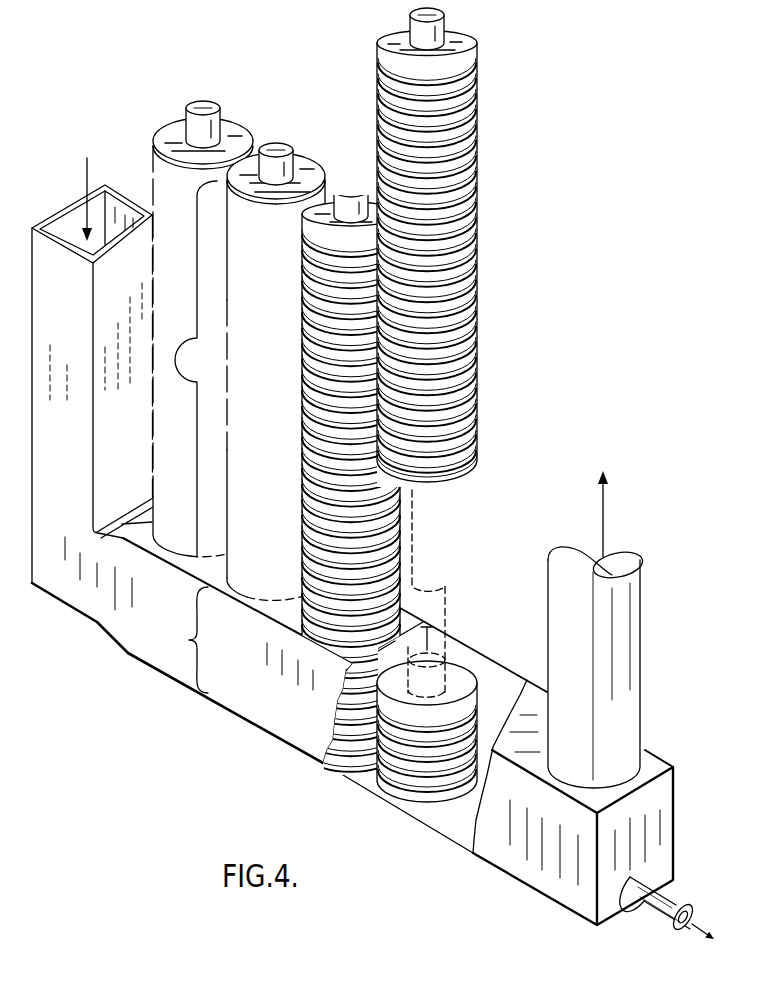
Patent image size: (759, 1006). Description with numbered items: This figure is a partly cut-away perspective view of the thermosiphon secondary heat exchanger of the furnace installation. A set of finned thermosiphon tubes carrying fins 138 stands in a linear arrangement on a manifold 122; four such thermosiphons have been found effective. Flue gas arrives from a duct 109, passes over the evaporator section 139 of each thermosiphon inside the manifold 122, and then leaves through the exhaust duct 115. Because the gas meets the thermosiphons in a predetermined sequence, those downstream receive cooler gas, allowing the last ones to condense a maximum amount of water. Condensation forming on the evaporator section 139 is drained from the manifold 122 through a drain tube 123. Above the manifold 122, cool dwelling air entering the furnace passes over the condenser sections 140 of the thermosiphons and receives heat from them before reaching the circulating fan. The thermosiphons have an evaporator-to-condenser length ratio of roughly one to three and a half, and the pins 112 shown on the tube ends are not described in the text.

The duct 109 is at (52, 265).
The pin 112 is at (212, 106).
The exhaust duct 115 is at (622, 650).
The manifold 122 is at (227, 690).
The drain tube 123 is at (657, 903).
The fins 138 is at (462, 222).
The evaporator section 139 is at (182, 640).
The condenser sections 140 is at (185, 351).